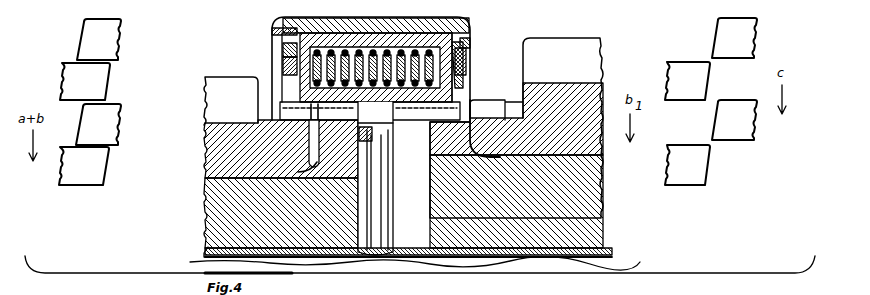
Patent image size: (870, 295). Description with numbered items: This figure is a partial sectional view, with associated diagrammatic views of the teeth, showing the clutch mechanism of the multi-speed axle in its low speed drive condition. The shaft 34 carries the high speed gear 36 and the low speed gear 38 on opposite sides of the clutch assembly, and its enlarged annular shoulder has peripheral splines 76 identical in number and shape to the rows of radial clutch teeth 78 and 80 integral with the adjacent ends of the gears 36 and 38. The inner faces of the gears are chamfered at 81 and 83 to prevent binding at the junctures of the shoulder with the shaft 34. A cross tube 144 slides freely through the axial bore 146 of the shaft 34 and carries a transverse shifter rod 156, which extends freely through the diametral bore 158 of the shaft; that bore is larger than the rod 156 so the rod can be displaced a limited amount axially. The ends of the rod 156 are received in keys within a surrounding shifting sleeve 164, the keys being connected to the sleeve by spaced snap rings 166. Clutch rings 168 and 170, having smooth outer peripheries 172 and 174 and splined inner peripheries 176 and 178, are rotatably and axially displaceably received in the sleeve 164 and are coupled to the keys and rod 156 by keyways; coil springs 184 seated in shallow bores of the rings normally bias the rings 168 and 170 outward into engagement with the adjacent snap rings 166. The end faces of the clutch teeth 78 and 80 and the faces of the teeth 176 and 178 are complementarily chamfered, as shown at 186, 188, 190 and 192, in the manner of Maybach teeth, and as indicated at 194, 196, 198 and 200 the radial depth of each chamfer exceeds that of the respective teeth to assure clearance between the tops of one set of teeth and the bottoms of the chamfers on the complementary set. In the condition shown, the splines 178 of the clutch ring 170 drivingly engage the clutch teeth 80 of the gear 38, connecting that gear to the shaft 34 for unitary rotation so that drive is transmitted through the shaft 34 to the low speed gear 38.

The shaft 34 is at (210, 196).
The high speed gear 36 is at (590, 55).
The low speed gear 38 is at (210, 150).
The peripheral splines 76 is at (382, 110).
The clutch teeth 78 is at (758, 32).
The clutch teeth 80 is at (70, 70).
The chamfer 81 is at (474, 140).
The chamfer 83 is at (317, 167).
The cross tube 144 is at (206, 255).
The axial bore 146 is at (210, 246).
The transverse shifter rod 156 is at (408, 189).
The diametral bore 158 is at (428, 213).
The shifting sleeve 164 is at (292, 22).
The snap rings 166 is at (283, 62).
The clutch ring 168 is at (470, 42).
The clutch ring 170 is at (283, 50).
The smooth outer periphery 172 is at (470, 26).
The smooth outer periphery 174 is at (272, 31).
The splined inner periphery 176 is at (674, 70).
The splined inner periphery 178 is at (116, 33).
The coil springs 184 is at (385, 52).
The chamfer 186 is at (628, 79).
The chamfer 188 is at (157, 114).
The chamfer 190 is at (510, 112).
The chamfer 192 is at (195, 90).
The chamfer depth clearance 194 is at (480, 132).
The chamfer depth clearance 196 is at (309, 134).
The chamfer depth clearance 198 is at (466, 90).
The chamfer depth clearance 200 is at (272, 100).